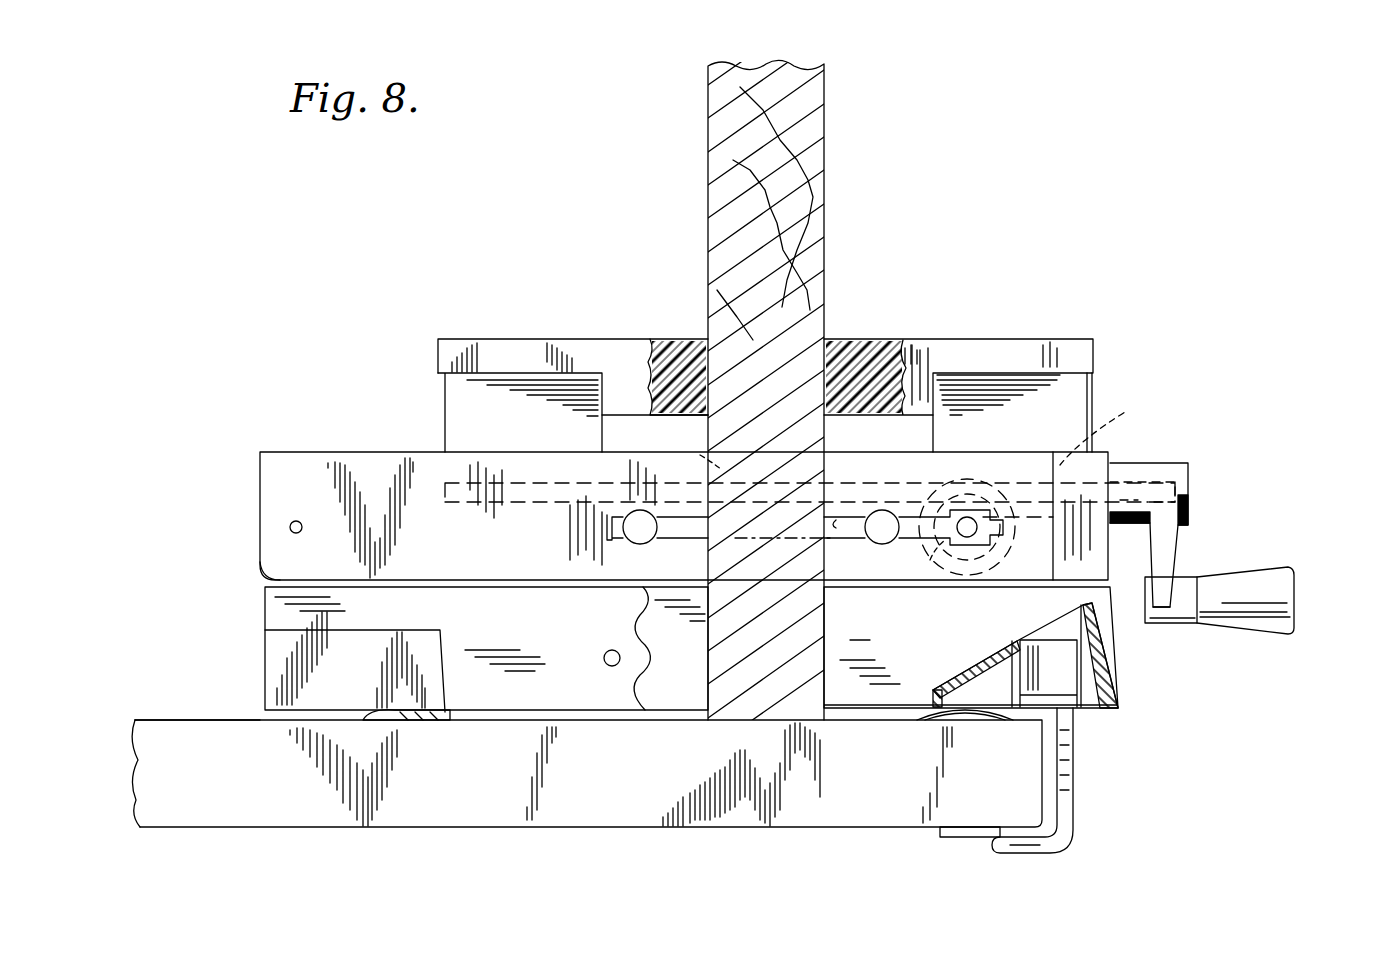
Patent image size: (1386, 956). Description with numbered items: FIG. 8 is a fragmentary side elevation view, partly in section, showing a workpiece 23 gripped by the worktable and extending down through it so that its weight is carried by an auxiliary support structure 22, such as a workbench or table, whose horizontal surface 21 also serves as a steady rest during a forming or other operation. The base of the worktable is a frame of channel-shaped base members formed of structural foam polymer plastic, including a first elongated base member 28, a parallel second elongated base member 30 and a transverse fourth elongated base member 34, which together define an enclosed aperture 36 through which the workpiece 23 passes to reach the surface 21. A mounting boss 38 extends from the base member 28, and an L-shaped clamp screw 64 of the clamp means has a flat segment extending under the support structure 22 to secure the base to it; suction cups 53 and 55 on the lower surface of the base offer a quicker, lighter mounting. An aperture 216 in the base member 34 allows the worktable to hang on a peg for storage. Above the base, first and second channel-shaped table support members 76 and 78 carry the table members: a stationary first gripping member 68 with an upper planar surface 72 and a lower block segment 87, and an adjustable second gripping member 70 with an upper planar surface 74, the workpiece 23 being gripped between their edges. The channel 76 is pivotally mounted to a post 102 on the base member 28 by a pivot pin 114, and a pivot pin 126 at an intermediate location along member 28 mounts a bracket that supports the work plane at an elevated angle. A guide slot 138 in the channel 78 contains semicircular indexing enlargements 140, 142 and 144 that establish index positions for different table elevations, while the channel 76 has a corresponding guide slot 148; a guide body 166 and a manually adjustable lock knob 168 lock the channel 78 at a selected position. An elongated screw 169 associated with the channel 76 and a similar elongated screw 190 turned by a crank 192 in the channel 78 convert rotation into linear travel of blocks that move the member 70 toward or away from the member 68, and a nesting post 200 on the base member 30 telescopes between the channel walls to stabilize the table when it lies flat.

The workpiece 23 is at (828, 162).
The second work piece gripping member 70 is at (512, 355).
The upper planar surface 74 is at (682, 345).
The upper planar surface 72 is at (862, 345).
The first work piece gripping member 68 is at (1008, 352).
The lower block segment 87 is at (1075, 388).
The first table support member 76 is at (370, 442).
The pivot pin 114 is at (289, 527).
The post 102 is at (262, 580).
The screw 169 is at (535, 505).
The semicircular enlargement 140 is at (968, 545).
The guide slot 148 is at (615, 532).
The semicircular enlargement 142 is at (884, 512).
The guide slot 138 is at (840, 520).
The semicircular enlargement 144 is at (720, 452).
The second table support member 78 is at (965, 455).
The manually adjustable lock knob 168 is at (1010, 570).
The guide body 166 is at (935, 578).
The first elongated base member 28 is at (578, 629).
The mounting boss 38 is at (270, 648).
The second elongated base member 30 is at (696, 672).
The pivot pin 126 is at (606, 665).
The enclosed aperture 36 is at (862, 640).
The fourth elongated base member 34 is at (1115, 672).
The aperture 216 is at (1043, 690).
The auxiliary support structure 22 is at (268, 800).
The surface 21 is at (175, 720).
The suction cup 55 is at (412, 716).
The suction cup 53 is at (965, 714).
The L-shaped clamp screw 64 is at (1075, 832).
The elongated screw 190 is at (1160, 480).
The nesting post 200 is at (1124, 429).
The crank 192 is at (1282, 566).